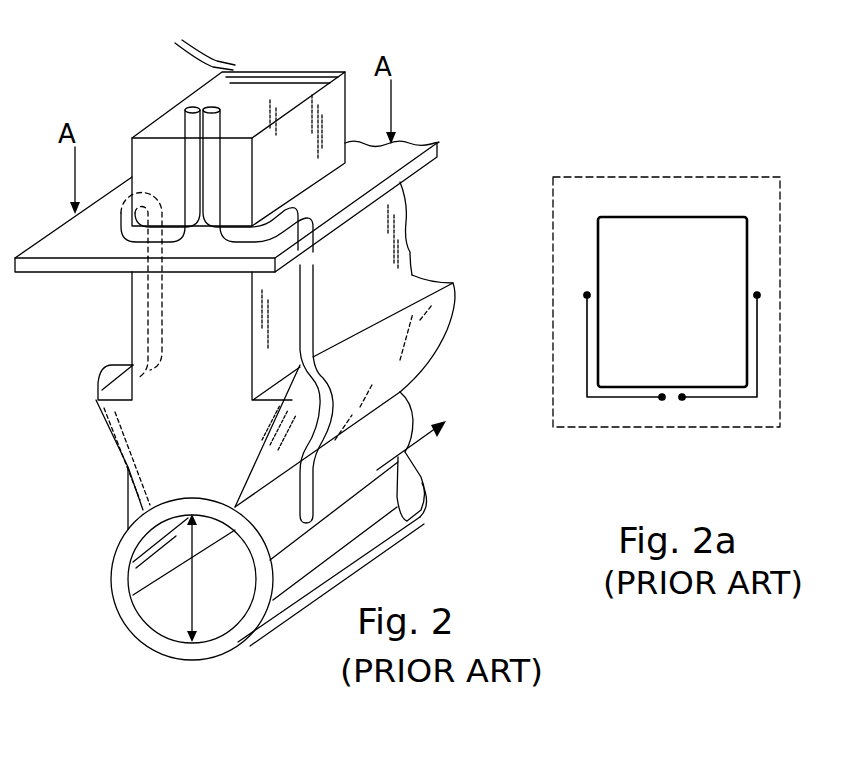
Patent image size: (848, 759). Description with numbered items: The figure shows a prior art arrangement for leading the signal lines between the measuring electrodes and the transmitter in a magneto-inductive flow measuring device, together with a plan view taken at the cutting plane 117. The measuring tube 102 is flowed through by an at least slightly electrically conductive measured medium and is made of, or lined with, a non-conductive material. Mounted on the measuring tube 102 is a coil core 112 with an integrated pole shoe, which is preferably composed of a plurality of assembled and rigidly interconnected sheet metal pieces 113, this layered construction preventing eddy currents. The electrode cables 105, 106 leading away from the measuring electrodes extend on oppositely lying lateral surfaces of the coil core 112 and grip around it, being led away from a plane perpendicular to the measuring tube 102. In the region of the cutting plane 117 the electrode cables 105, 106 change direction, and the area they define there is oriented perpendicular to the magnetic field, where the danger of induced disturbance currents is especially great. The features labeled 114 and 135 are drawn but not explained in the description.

In FIG. 2, the measuring tube 102 is at (232, 641).
In FIG. 2, the electrode cable 105 is at (314, 283).
In FIG. 2A, the electrode cable 105 is at (738, 400).
In FIG. 2, the electrode cable 106 is at (113, 366).
In FIG. 2A, the electrode cable 106 is at (628, 400).
In FIG. 2, the coil core 112 is at (288, 70).
In FIG. 2, the sheet metal pieces 113 is at (187, 43).
In FIG. 2, the slot 114 is at (148, 568).
In FIG. 2, the cutting plane 117 is at (363, 168).
In FIG. 2A, the cutting plane 117 is at (687, 317).
In FIG. 2, the inner diameter 135 is at (192, 588).